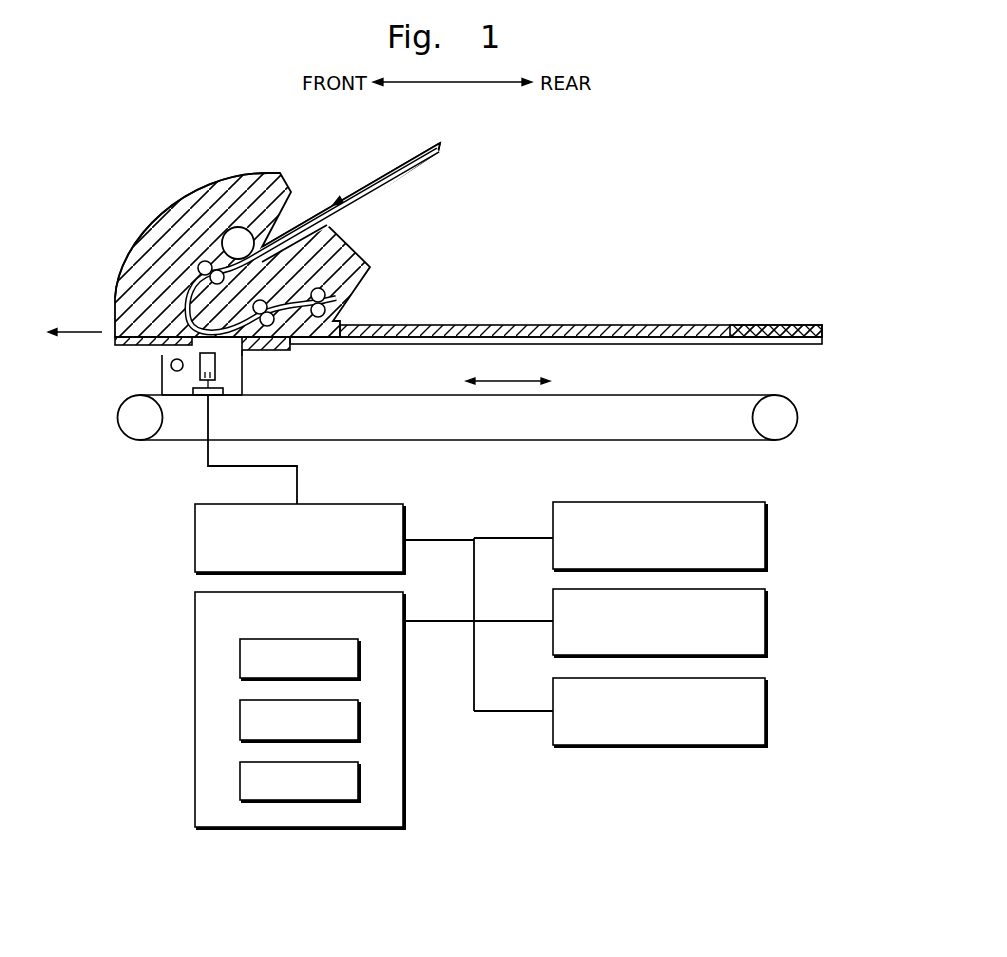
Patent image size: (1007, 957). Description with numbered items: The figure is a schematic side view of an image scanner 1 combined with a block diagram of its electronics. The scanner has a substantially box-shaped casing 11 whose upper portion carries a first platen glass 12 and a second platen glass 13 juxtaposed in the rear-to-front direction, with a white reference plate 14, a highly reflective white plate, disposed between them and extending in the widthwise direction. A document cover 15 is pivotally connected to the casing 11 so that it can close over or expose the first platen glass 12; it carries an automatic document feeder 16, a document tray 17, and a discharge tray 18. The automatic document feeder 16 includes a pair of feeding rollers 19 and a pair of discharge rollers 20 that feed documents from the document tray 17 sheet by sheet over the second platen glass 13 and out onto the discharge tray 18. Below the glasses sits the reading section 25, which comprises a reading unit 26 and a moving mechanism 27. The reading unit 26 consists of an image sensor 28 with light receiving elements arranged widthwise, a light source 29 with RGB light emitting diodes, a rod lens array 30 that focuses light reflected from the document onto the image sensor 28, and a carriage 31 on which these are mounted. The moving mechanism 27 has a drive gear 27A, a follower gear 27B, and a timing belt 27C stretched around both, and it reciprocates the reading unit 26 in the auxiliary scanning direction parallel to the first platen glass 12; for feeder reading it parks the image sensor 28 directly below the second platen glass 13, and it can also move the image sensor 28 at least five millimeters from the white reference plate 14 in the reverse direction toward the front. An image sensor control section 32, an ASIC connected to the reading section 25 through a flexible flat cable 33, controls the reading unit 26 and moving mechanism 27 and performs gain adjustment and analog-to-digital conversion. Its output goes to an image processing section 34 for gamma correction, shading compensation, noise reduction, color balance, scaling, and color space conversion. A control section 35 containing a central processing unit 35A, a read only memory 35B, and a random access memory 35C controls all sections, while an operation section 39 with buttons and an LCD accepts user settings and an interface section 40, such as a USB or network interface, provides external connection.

The image scanner 1 is at (547, 258).
The casing 11 is at (128, 346).
The first platen glass 12 is at (606, 345).
The second platen glass 13 is at (232, 349).
The white reference plate 14 is at (282, 351).
The document cover 15 is at (152, 212).
The automatic document feeder 16 is at (238, 178).
The document tray 17 is at (377, 178).
The discharge tray 18 is at (608, 325).
The pair of feeding rollers 19 is at (204, 260).
The pair of discharge rollers 20 is at (325, 310).
The reading section 25 is at (455, 448).
The reading unit 26 is at (146, 360).
The moving mechanism 27 is at (486, 448).
The drive gear 27A is at (780, 423).
The follower gear 27B is at (137, 433).
The timing belt 27C is at (652, 441).
The image sensor 28 is at (223, 393).
The light source 29 is at (171, 367).
The rod lens array 30 is at (218, 378).
The carriage 31 is at (162, 390).
The image sensor control section 32 is at (195, 543).
The flexible flat cable 33 is at (260, 467).
The image processing section 34 is at (766, 535).
The control section 35 is at (195, 607).
The central processing unit 35A is at (240, 661).
The read only memory 35B is at (240, 716).
The random access memory 35C is at (240, 784).
The operation section 39 is at (766, 623).
The interface section 40 is at (766, 716).